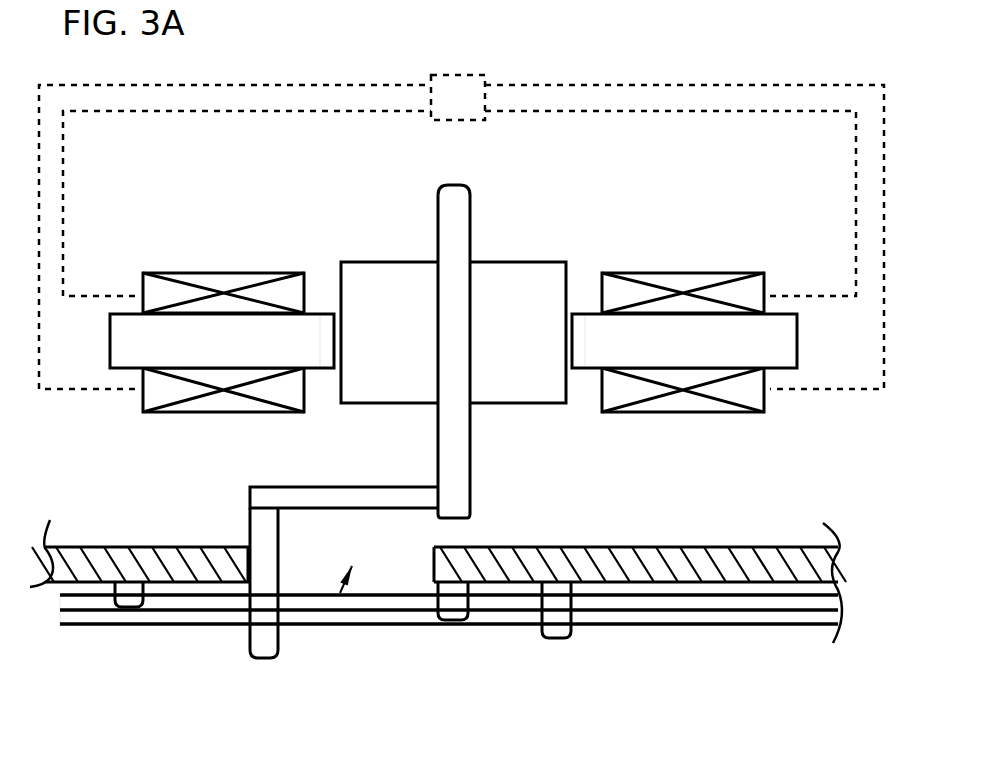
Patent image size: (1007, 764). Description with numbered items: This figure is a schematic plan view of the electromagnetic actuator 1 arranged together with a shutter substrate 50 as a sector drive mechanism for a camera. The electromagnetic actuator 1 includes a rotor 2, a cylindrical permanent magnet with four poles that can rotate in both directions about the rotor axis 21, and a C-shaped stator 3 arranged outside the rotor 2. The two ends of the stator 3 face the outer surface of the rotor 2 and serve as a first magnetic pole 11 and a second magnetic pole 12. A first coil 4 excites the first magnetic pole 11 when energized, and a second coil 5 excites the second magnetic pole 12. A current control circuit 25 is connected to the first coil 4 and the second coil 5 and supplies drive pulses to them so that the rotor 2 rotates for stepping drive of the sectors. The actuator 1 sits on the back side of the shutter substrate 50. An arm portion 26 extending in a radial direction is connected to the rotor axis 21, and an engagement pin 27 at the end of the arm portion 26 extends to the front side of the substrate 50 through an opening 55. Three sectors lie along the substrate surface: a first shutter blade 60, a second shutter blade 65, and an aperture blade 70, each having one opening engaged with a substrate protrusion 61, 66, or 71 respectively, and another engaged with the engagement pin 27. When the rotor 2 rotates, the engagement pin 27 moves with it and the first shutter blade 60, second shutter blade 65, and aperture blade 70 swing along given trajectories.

The electromagnetic actuator 1 is at (680, 226).
The rotor 2 is at (511, 278).
The stator 3 is at (128, 346).
The first coil 4 is at (197, 272).
The second coil 5 is at (740, 277).
The first magnetic pole 11 is at (325, 327).
The second magnetic pole 12 is at (580, 330).
The rotor axis 21 is at (462, 475).
The current control circuit 25 is at (461, 232).
The arm portion 26 is at (318, 496).
The engagement pin 27 is at (263, 643).
The shutter substrate 50 is at (718, 548).
The opening 55 is at (340, 593).
The first shutter blade 60 is at (62, 597).
The protrusion 61 is at (137, 602).
The second shutter blade 65 is at (372, 612).
The protrusion 66 is at (455, 621).
The aperture blade 70 is at (637, 627).
The protrusion 71 is at (550, 639).